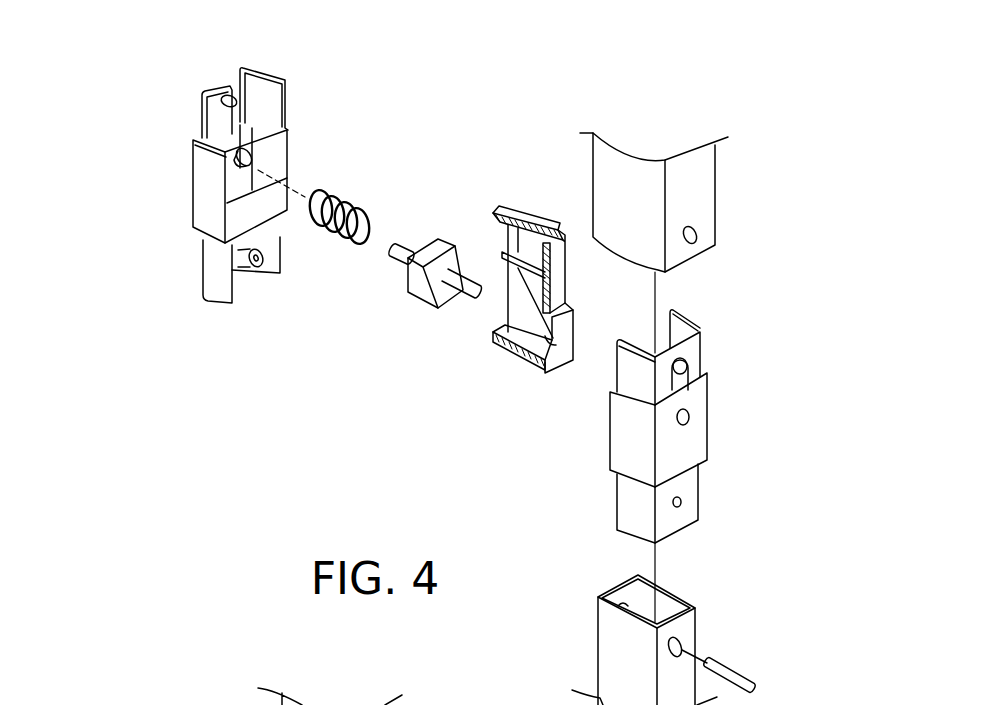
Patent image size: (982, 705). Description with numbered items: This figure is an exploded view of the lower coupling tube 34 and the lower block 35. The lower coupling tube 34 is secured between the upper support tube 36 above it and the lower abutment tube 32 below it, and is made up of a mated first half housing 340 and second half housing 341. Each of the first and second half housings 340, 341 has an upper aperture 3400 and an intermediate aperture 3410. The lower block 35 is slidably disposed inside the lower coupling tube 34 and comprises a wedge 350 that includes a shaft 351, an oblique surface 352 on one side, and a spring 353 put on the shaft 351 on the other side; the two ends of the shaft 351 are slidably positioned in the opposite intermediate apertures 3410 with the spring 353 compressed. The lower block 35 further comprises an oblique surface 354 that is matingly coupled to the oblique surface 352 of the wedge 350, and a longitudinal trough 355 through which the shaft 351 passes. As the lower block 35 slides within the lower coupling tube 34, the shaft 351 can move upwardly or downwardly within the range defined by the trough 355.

The lower abutment tube 32 is at (698, 622).
The lower coupling tube 34 is at (287, 347).
The lower block 35 is at (503, 405).
The upper support tube 36 is at (700, 185).
The first half housing 340 is at (200, 193).
The second half housing 341 is at (703, 447).
The wedge 350 is at (409, 302).
The shaft 351 is at (390, 255).
The oblique surface 352 is at (453, 248).
The spring 353 is at (352, 203).
The oblique surface 354 is at (521, 291).
The longitudinal trough 355 is at (572, 350).
The upper aperture 3400 is at (228, 95).
The intermediate aperture 3410 is at (250, 158).